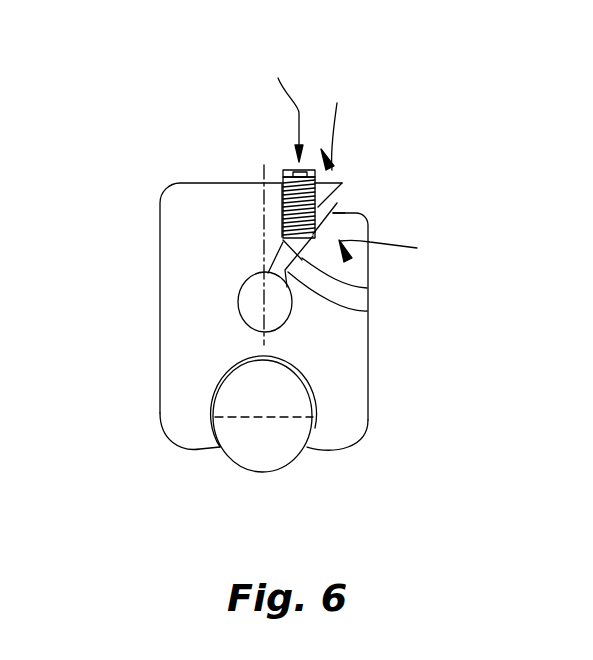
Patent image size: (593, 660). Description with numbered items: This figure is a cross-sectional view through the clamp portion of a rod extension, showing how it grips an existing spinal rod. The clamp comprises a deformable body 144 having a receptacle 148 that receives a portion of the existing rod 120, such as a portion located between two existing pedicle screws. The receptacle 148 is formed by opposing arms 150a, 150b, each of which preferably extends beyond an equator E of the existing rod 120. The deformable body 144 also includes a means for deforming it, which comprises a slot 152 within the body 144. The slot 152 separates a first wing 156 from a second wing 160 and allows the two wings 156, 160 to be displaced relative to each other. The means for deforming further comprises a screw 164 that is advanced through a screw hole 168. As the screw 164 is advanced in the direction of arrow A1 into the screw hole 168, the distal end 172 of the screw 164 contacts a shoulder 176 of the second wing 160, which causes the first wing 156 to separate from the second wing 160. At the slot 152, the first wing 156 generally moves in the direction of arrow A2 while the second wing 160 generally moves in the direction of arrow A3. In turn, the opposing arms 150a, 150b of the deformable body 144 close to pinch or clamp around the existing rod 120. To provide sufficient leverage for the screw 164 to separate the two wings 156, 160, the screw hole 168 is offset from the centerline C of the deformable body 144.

The existing rod 120 is at (272, 447).
The deformable body 144 is at (340, 343).
The receptacle 148 is at (303, 373).
The opposing arm 150a is at (172, 400).
The opposing arm 150b is at (342, 420).
The slot 152 is at (337, 203).
The first wing 156 is at (342, 183).
The second wing 160 is at (337, 213).
The screw 164 is at (285, 170).
The screw hole 168 is at (275, 216).
The distal end 172 is at (367, 288).
The shoulder 176 is at (367, 311).
The arrow A1 is at (281, 103).
The arrow A2 is at (336, 119).
The arrow A3 is at (391, 254).
The centerline C is at (265, 246).
The equator E is at (240, 418).